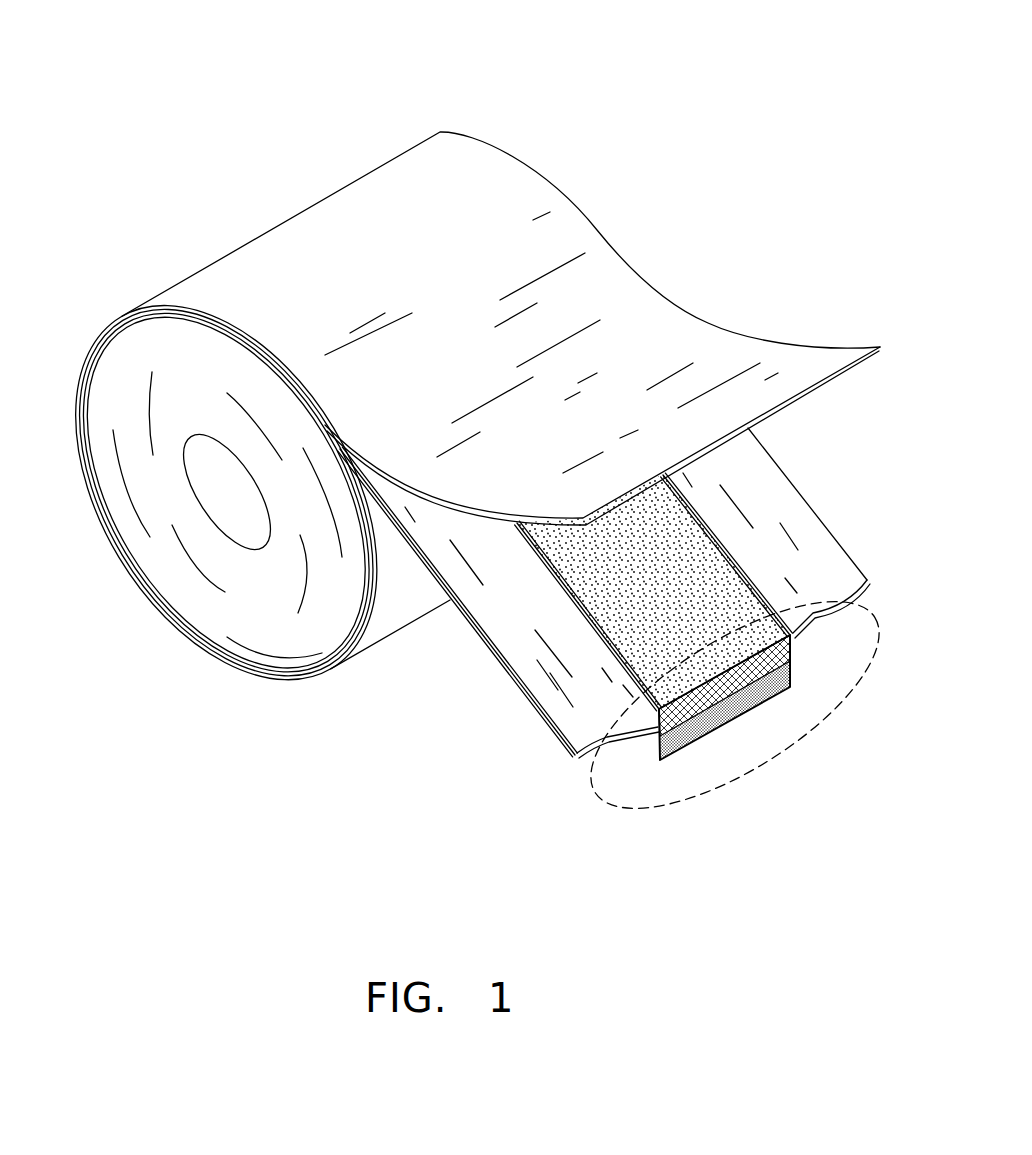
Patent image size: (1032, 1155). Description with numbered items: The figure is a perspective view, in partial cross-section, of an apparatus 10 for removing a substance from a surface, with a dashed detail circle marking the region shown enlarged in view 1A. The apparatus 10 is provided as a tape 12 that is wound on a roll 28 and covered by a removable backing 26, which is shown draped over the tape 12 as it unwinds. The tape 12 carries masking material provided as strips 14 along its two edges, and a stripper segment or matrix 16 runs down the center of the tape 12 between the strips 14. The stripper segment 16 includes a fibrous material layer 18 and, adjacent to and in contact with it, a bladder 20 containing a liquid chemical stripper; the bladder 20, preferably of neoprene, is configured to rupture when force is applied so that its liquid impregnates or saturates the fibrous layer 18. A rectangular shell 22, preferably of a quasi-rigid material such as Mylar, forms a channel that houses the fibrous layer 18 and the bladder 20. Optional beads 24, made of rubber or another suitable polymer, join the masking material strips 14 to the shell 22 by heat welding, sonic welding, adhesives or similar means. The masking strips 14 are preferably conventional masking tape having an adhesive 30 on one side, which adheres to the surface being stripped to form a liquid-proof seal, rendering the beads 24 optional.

The apparatus 10 is at (645, 195).
The tape 12 is at (102, 303).
The strips 14 is at (503, 627).
The stripper segment 16 is at (787, 702).
The fibrous material layer 18 is at (656, 730).
The bladder 20 is at (661, 760).
The rectangular shell 22 is at (765, 706).
The beads 24 is at (720, 473).
The removable backing 26 is at (492, 200).
The roll 28 is at (177, 577).
The adhesive 30 is at (760, 525).
The detail view indicator 1A is at (673, 800).